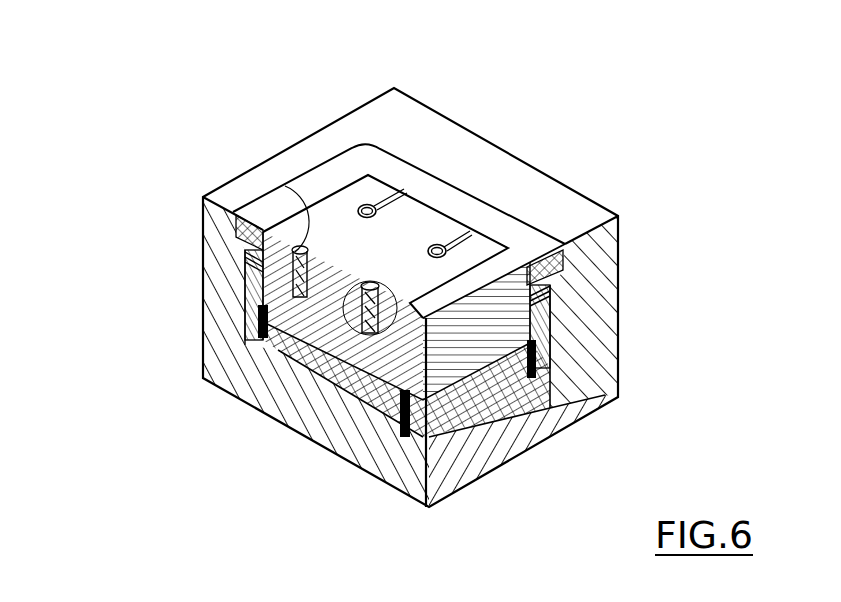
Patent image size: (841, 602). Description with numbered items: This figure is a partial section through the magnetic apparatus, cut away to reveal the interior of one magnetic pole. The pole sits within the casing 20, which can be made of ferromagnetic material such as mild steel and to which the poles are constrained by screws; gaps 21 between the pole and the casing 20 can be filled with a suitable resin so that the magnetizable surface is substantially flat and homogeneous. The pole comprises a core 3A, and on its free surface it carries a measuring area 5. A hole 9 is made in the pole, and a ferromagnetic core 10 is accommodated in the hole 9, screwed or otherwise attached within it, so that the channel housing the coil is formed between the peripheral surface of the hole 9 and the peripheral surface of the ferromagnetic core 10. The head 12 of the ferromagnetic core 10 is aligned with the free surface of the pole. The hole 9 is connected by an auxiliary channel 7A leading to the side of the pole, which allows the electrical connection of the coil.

The casing 20 is at (330, 405).
The core 3A is at (283, 353).
The measuring area 5 is at (285, 186).
The hole 9 is at (360, 204).
The ferromagnetic core 10 is at (367, 204).
The head 12 is at (386, 216).
The auxiliary channel 7A is at (468, 232).
The gap 21 is at (245, 254).